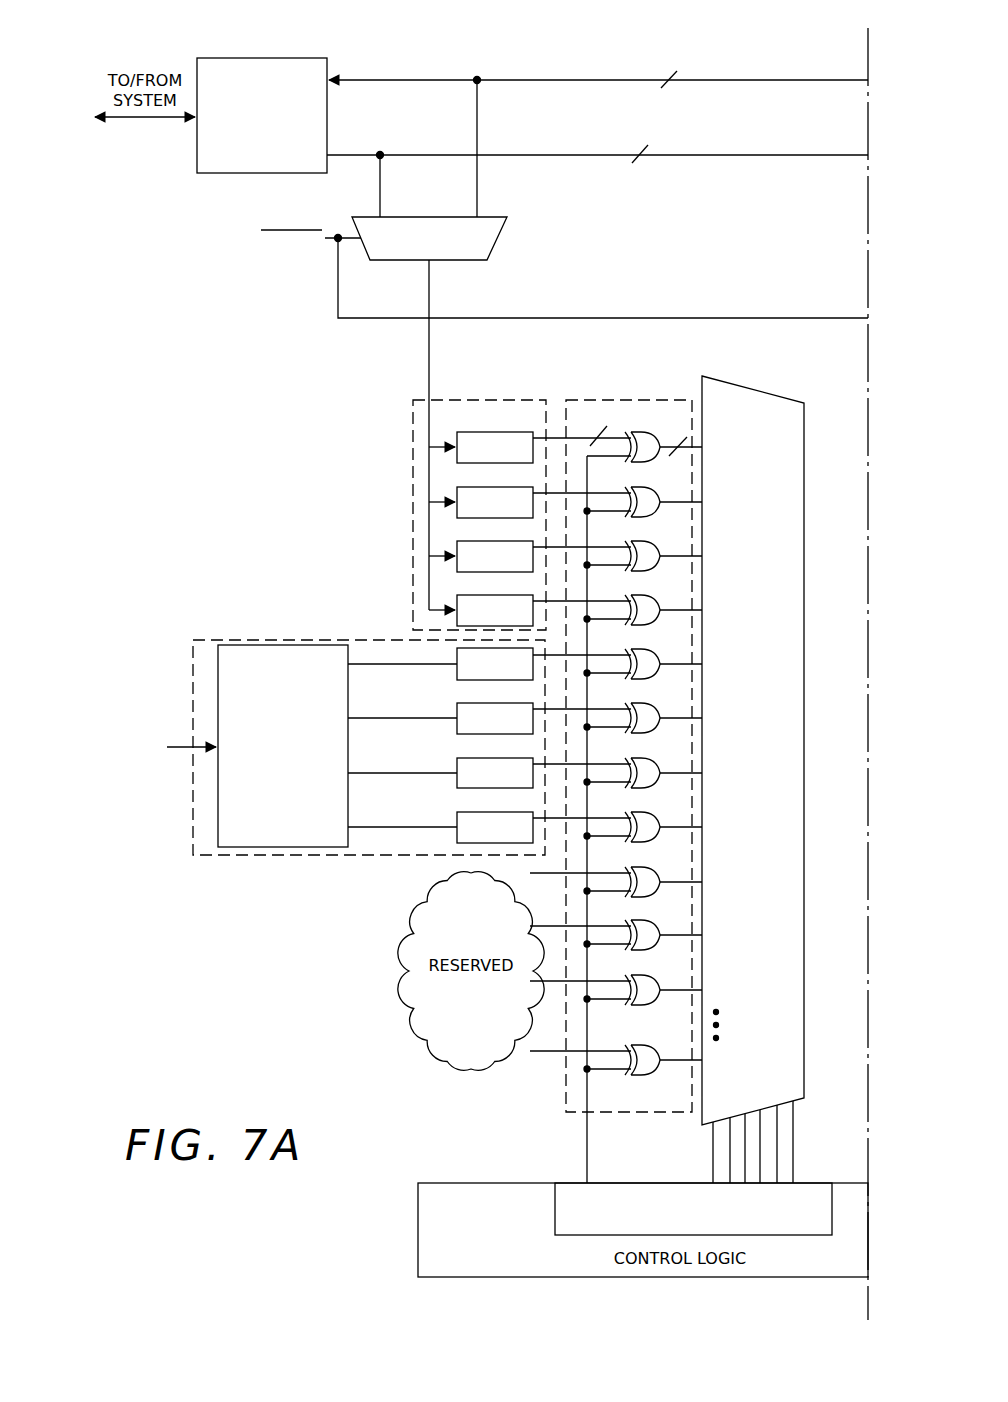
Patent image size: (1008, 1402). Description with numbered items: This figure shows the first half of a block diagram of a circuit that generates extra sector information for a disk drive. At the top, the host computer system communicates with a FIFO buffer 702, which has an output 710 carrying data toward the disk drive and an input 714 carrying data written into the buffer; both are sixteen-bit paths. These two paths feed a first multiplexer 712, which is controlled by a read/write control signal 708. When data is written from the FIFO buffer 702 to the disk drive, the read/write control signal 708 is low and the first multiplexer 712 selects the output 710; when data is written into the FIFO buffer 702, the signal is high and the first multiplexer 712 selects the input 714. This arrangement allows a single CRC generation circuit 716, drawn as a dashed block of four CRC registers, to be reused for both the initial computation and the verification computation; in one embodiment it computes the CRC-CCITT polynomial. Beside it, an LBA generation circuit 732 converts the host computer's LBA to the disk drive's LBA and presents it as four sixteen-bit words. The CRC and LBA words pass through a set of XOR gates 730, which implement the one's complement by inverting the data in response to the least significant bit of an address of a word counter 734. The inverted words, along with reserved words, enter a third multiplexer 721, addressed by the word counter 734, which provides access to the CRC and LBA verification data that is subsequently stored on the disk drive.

The FIFO buffer 702 is at (288, 58).
The read/write control signal 708 is at (473, 318).
The output of the FIFO buffer 710 is at (398, 155).
The first multiplexer 712 is at (490, 217).
The input to the FIFO buffer 714 is at (393, 80).
The CRC generation circuit 716 is at (458, 400).
The third multiplexer 721 is at (742, 386).
The set of XOR gates 730 is at (593, 400).
The LBA generation circuit 732 is at (280, 640).
The word counter 734 is at (555, 1225).